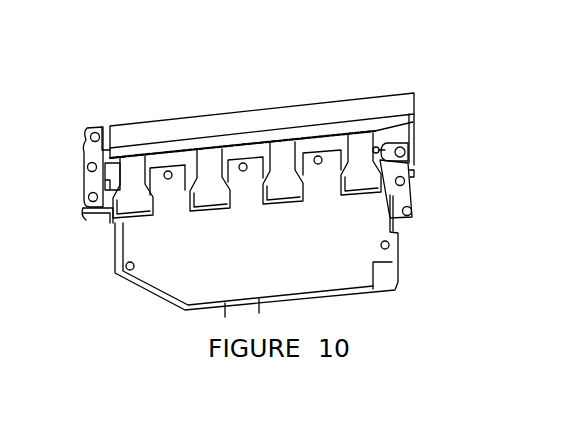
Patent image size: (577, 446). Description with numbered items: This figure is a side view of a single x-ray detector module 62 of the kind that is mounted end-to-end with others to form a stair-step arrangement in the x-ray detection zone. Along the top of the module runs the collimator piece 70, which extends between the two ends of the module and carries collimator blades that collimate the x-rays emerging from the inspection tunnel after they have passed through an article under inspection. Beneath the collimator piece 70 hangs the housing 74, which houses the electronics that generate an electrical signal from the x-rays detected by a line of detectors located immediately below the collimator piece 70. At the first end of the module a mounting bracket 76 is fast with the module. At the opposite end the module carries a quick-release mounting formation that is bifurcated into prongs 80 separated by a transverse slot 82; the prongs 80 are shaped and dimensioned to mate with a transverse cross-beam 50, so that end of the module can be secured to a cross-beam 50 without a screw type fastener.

The transverse cross-beam 50 is at (84, 140).
The x-ray detector module 62 is at (320, 168).
The collimator piece 70 is at (298, 102).
The housing 74 is at (320, 266).
The mounting bracket 76 is at (104, 216).
The prongs 80 is at (387, 143).
The transverse slot 82 is at (403, 147).